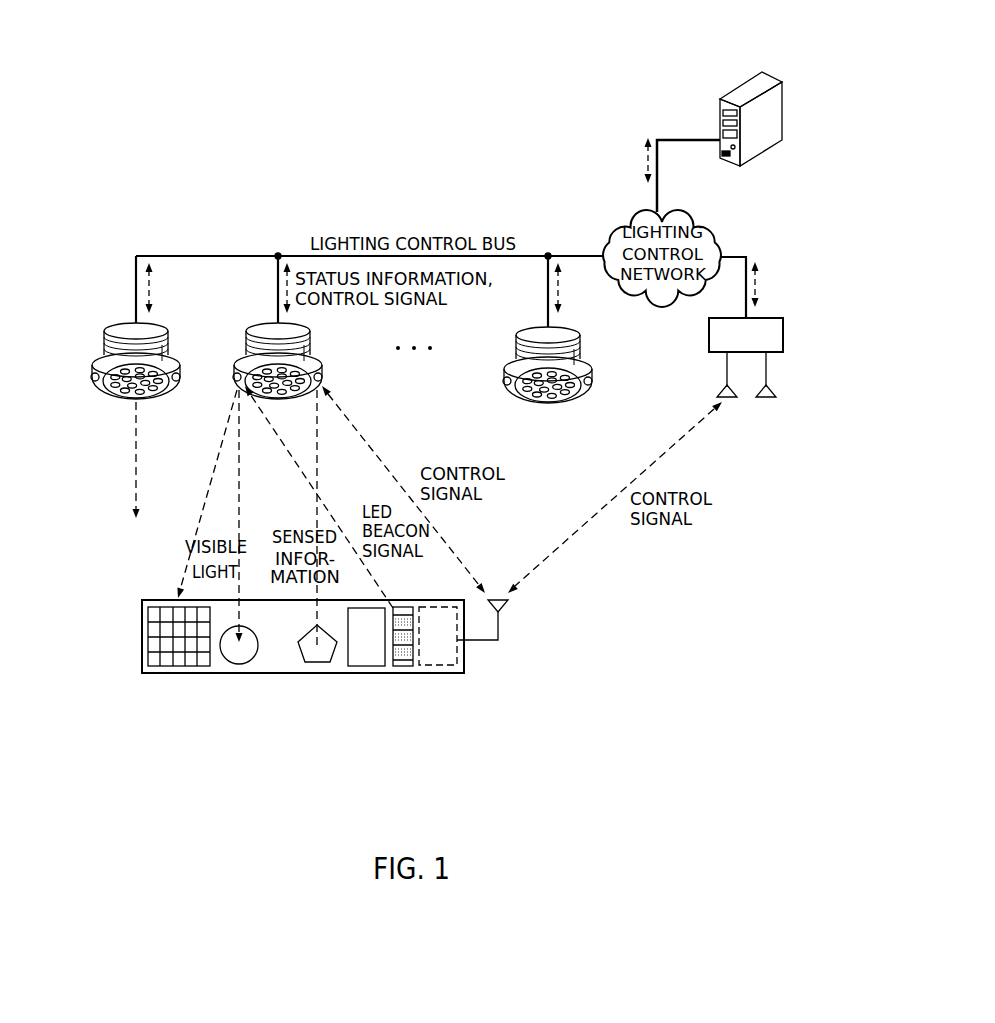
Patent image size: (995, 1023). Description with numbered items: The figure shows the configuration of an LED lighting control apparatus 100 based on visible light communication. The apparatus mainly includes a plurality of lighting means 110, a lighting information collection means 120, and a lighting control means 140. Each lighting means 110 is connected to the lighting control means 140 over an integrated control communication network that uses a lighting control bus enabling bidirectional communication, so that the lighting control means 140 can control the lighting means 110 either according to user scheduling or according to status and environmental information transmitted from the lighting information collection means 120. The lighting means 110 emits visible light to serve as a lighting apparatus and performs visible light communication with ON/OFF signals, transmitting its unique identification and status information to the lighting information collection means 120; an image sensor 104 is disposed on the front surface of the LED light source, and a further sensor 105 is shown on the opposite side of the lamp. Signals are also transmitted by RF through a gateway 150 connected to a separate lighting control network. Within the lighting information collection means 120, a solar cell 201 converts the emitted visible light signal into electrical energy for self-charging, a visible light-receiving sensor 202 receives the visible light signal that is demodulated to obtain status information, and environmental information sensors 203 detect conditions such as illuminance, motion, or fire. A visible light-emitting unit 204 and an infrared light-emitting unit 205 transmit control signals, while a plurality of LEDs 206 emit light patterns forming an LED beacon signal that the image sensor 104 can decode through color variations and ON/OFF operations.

The LED lighting control apparatus 100 is at (457, 22).
The image sensor 104 is at (78, 402).
The sensor 105 is at (192, 409).
The lighting means 110 is at (139, 413).
The lighting information collection means 120 is at (468, 659).
The lighting control means 140 is at (727, 90).
The gateway 150 is at (709, 337).
The solar cell 201 is at (150, 606).
The visible light-receiving sensor 202 is at (253, 666).
The environmental information sensors 203 is at (320, 664).
The visible light-emitting unit 204 is at (368, 668).
The infrared light-emitting unit 205 is at (402, 667).
The LEDs 206 is at (438, 667).